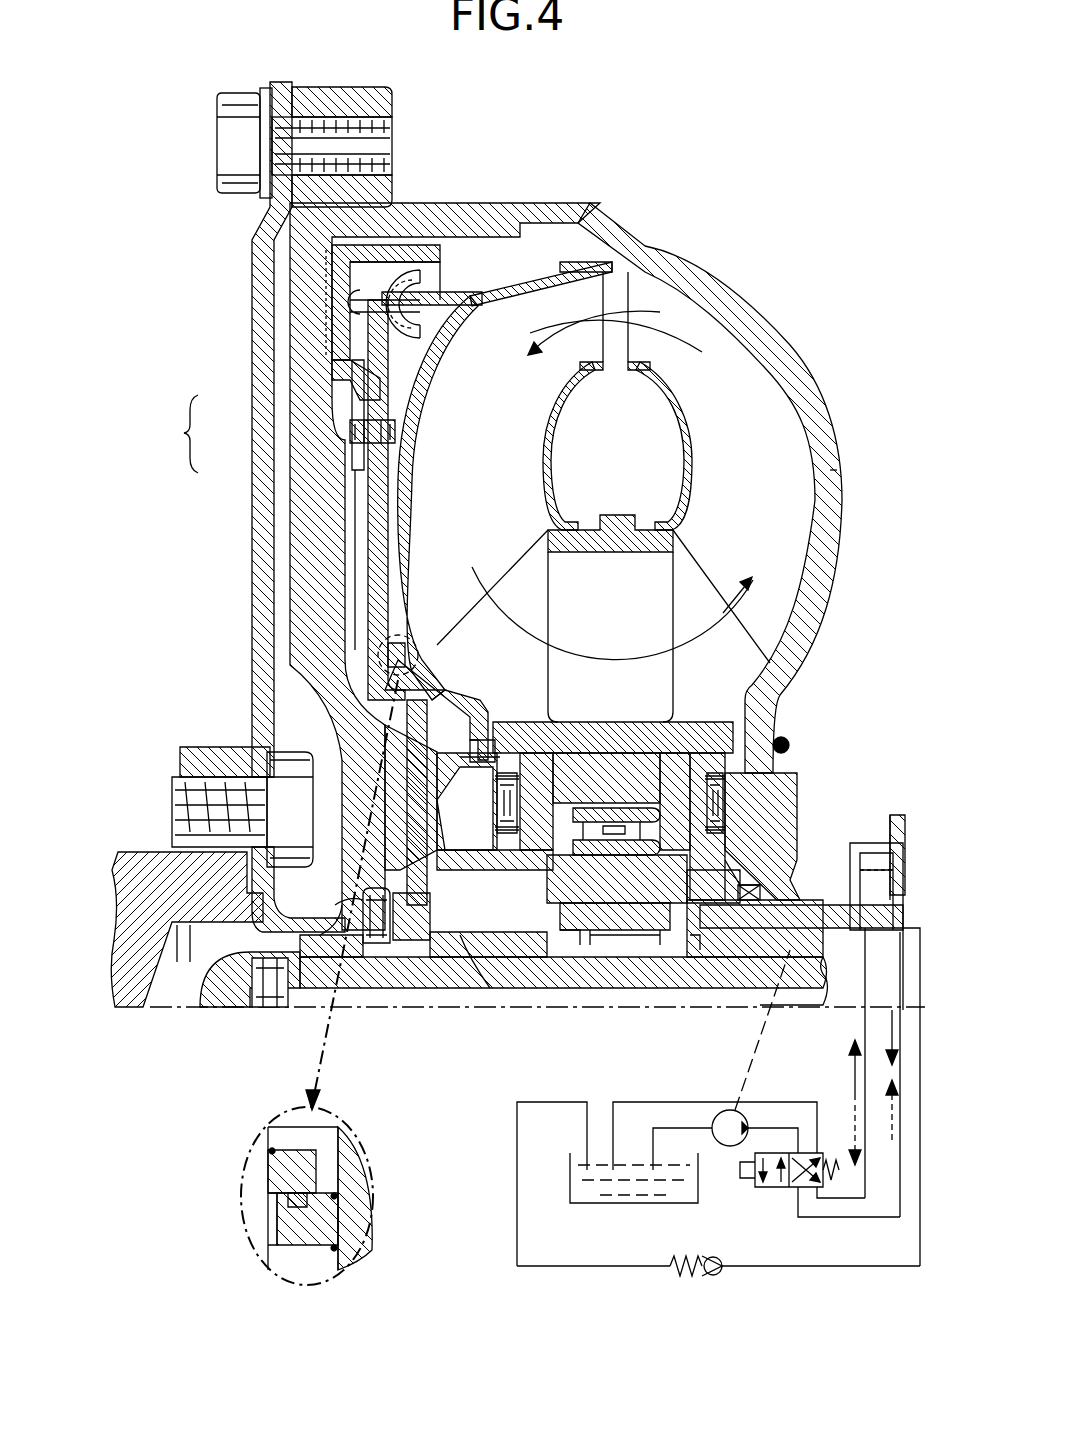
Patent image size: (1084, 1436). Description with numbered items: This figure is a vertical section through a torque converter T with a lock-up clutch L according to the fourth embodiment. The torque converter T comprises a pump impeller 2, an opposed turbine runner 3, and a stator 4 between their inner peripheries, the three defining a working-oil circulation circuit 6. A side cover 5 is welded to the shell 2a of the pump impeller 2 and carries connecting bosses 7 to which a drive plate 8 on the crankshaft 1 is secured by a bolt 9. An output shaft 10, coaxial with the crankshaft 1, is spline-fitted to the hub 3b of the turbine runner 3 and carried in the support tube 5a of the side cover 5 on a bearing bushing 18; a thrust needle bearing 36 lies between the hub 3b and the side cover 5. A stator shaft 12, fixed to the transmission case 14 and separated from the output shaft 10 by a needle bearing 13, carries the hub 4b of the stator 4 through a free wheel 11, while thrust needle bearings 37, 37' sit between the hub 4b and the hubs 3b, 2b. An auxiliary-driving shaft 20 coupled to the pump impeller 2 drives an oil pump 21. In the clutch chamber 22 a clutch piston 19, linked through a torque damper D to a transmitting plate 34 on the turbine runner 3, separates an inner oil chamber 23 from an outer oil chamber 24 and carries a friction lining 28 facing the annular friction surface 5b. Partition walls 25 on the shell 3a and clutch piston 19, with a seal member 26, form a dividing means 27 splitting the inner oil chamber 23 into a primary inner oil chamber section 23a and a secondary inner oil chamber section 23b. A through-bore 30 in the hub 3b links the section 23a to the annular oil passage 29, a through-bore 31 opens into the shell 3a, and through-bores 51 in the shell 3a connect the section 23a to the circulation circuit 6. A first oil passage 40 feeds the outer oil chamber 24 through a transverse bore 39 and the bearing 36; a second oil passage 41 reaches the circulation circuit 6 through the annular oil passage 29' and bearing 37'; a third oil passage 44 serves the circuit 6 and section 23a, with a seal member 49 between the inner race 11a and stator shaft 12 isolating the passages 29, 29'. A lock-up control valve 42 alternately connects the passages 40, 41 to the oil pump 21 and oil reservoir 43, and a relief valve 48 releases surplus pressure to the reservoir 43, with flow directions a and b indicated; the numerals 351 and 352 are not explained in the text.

The crankshaft 1 is at (145, 853).
The pump impeller 2 is at (805, 354).
The shell 2a is at (840, 470).
The hub 2b is at (760, 800).
The turbine runner 3 is at (585, 295).
The shell 3a is at (440, 370).
The hub 3b is at (460, 935).
The stator 4 is at (654, 680).
The hub 4b is at (598, 722).
The side cover 5 is at (300, 578).
The support tube 5a is at (222, 1000).
The annular friction surface 5b is at (335, 272).
The circulation circuit 6 is at (740, 489).
The connecting bosses 7 is at (378, 108).
The drive plate 8 is at (262, 645).
The bolt 9 is at (228, 152).
The output shaft 10 is at (812, 970).
The free wheel 11 is at (610, 805).
The inner race 11a is at (625, 945).
The stator shaft 12 is at (860, 928).
The needle bearing 13 is at (650, 905).
The transmission case 14 is at (892, 822).
The bearing bushing 18 is at (266, 1000).
The clutch piston 19 is at (378, 507).
The auxiliary-driving shaft 20 is at (820, 895).
The oil pump 21 is at (726, 1147).
The clutch chamber 22 is at (176, 434).
The inner oil chamber 23 is at (365, 465).
The primary inner oil chamber section 23a is at (475, 712).
The secondary inner oil chamber section 23b is at (405, 420).
The outer oil chamber 24 is at (340, 390).
The annular partition wall 25 is at (292, 1155).
The seal member 26 is at (290, 1195).
The dividing means 27 is at (270, 1212).
The friction lining 28 is at (340, 320).
The annular oil passage 29 is at (497, 993).
The annular oil passage 29' is at (784, 836).
The through-bore 30 is at (460, 850).
The through-bore 31 is at (488, 745).
The transmitting plate 34 is at (450, 298).
The oil passage 351 is at (692, 945).
The oil passage 352 is at (565, 945).
The thrust needle bearing 36 is at (398, 945).
The thrust needle bearing 37 is at (524, 765).
The thrust needle bearing 37' is at (701, 762).
The transverse bore 39 is at (375, 950).
The first oil passage 40 is at (845, 1010).
The second oil passage 41 is at (822, 1217).
The lock-up control valve 42 is at (768, 1188).
The oil reservoir 43 is at (570, 1170).
The third oil passage 44 is at (645, 1268).
The relief valve 48 is at (718, 1276).
The seal member 49 is at (752, 903).
The through-bores 51 is at (420, 655).
The torque converter T is at (770, 276).
The lock-up clutch L is at (445, 258).
The torque damper D is at (500, 330).
The oil flow direction a is at (853, 1080).
The oil flow direction b is at (886, 1122).